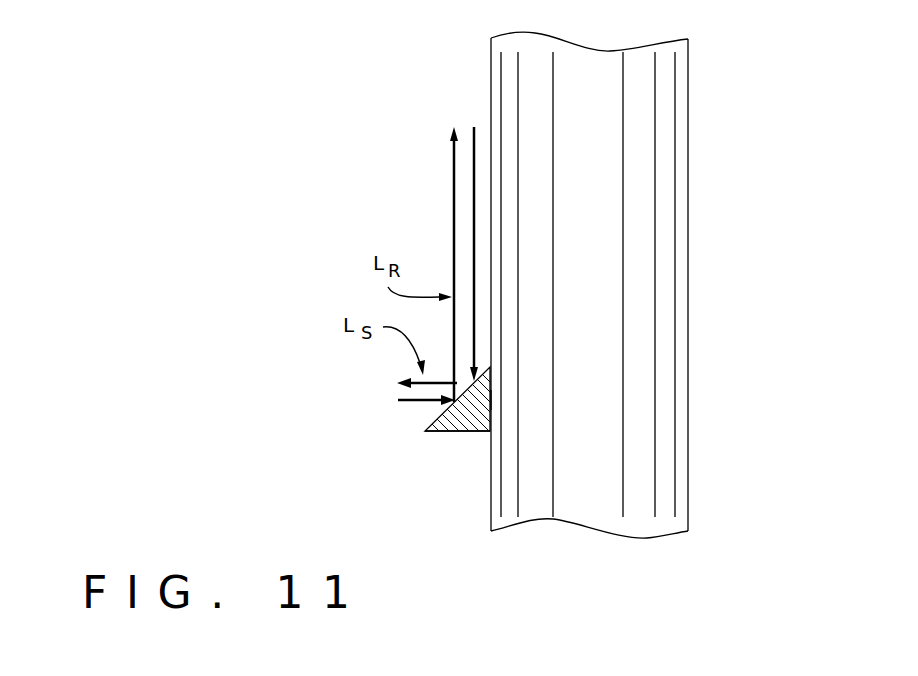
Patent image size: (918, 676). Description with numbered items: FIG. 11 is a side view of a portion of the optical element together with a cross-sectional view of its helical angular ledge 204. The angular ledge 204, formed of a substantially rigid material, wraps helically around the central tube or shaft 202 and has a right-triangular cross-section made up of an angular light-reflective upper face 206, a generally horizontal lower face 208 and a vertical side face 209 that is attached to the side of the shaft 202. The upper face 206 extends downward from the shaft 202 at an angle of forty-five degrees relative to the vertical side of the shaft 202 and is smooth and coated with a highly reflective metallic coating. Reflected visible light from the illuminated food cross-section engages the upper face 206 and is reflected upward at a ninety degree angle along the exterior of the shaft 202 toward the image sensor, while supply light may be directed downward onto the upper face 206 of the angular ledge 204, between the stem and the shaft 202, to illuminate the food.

The shaft 202 is at (607, 163).
The angular ledge 204 is at (458, 425).
The upper face 206 is at (425, 417).
The lower face 208 is at (477, 458).
The side face 209 is at (512, 397).